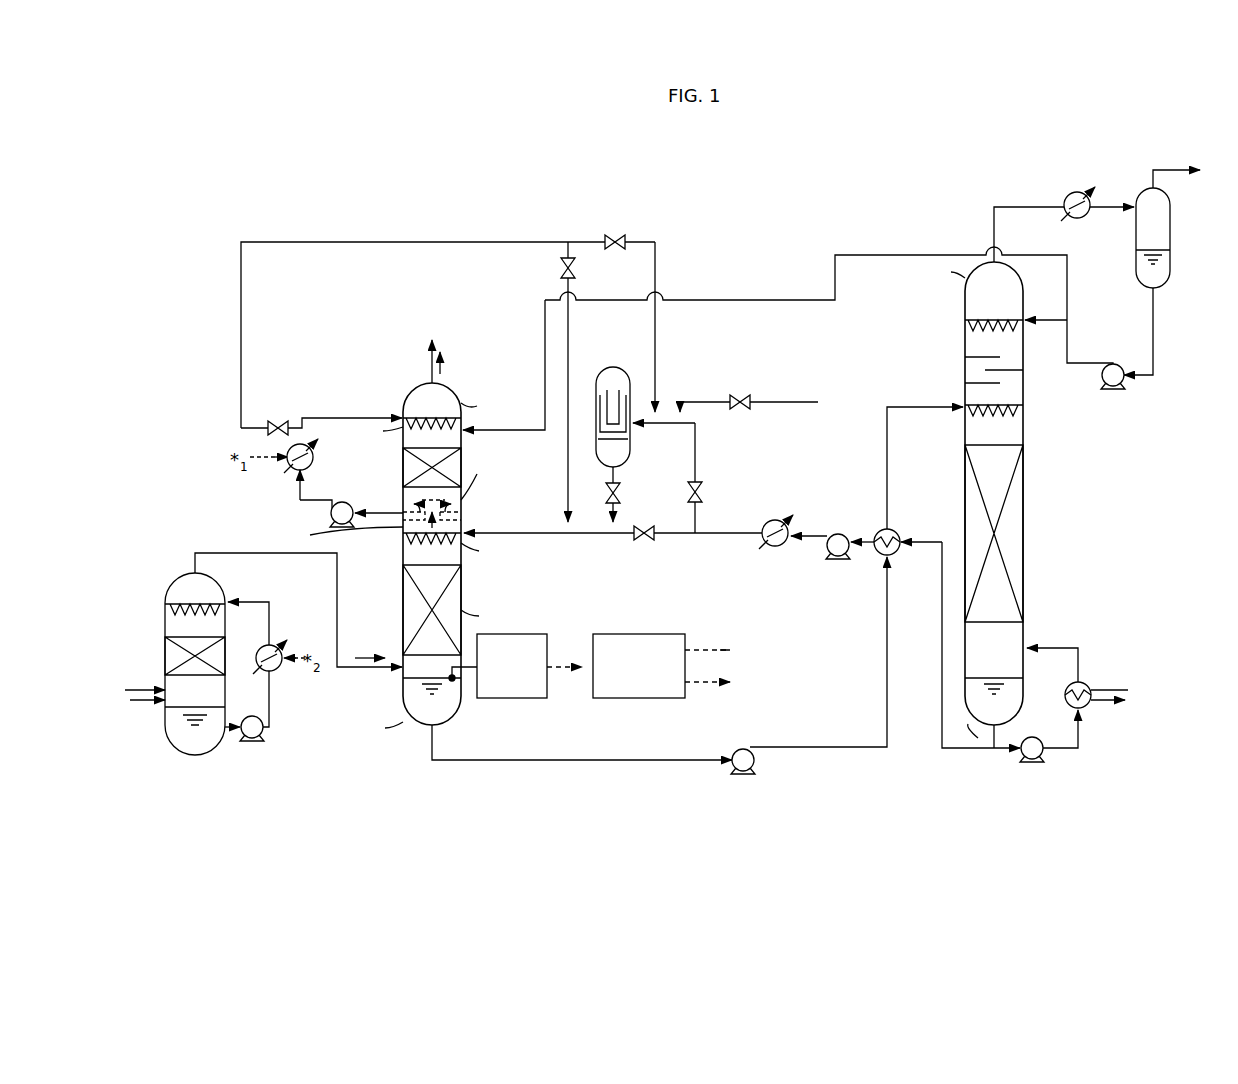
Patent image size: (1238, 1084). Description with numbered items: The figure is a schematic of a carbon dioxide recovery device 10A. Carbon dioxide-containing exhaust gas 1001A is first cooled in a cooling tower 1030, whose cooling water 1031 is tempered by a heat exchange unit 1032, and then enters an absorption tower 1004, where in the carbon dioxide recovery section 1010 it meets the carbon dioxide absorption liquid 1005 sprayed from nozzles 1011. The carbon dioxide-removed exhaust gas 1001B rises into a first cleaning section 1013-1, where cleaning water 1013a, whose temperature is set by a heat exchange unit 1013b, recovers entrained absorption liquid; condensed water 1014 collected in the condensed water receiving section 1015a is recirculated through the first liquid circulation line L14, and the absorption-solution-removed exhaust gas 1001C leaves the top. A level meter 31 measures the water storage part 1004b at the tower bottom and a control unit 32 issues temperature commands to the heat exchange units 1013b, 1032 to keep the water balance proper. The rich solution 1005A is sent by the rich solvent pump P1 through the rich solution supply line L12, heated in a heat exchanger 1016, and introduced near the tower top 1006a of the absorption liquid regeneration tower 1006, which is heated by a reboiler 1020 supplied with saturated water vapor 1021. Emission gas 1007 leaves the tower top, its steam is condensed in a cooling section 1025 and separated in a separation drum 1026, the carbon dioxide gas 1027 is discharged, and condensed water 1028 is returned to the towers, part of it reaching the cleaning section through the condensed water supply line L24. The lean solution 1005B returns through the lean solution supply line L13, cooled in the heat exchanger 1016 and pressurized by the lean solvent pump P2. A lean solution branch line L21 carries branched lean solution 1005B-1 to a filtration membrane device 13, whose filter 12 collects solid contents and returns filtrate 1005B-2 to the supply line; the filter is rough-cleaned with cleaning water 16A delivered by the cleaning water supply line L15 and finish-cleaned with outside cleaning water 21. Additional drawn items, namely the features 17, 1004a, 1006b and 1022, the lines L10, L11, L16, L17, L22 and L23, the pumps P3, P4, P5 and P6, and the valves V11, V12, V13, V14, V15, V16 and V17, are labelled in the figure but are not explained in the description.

The CO2 recovery device 10A is at (847, 186).
The filter 12 is at (630, 392).
The filtration membrane device 13 is at (620, 362).
The inner tube 17 is at (616, 400).
The cleaning water containing the absorption liquid 16A is at (670, 250).
The cleaning water from outside the system 21 is at (775, 393).
The level meter 31 is at (512, 698).
The control unit 32 is at (639, 698).
The CO2-containing exhaust gas 1001A is at (140, 713).
The CO2-removed exhaust gas 1001B is at (329, 538).
The CO2-absorption-solution-removed exhaust gas 1001C is at (442, 362).
The absorption tower 1004 is at (412, 374).
The column top 1004a is at (499, 409).
The water storage part 1004b is at (400, 736).
The CO2 absorption liquid 1005 is at (503, 525).
The rich solution 1005A is at (940, 390).
The lean solution 1005B is at (985, 762).
The branched lean solution 1005B-1 is at (708, 438).
The filtrate 1005B-2 is at (625, 522).
The absorption liquid regeneration tower 1006 is at (933, 310).
The tower top 1006a is at (934, 267).
The second column bottom 1006b is at (976, 733).
The emission gas 1007 is at (982, 212).
The CO2 recovery section 1010 is at (496, 613).
The nozzles 1011 is at (438, 492).
The first cleaning section 1013-1 is at (475, 430).
The cleaning water 1013a is at (365, 405).
The heat exchange unit 1013b is at (288, 466).
The condensed water 1014 is at (403, 510).
The condensed water receiving section 1015a is at (494, 478).
The heat exchanger 1016 is at (892, 528).
The reboiler 1020 is at (1080, 706).
The saturated water vapor 1021 is at (1111, 690).
The heating medium outlet 1022 is at (1122, 704).
The cooling section 1025 is at (1068, 194).
The separation drum 1026 is at (1134, 254).
The CO2 gas 1027 is at (1170, 168).
The condensed water 1028 is at (1165, 300).
The cooling tower 1030 is at (148, 590).
The cooling water 1031 is at (238, 592).
The heat exchange unit 1032 is at (282, 674).
The line L10 is at (138, 690).
The line L11 is at (360, 672).
The rich solution supply line L12 is at (590, 760).
The lean solution supply line L13 is at (940, 747).
The first liquid circulation line L14 is at (310, 500).
The cleaning water supply line L15 is at (518, 242).
The line L16 is at (998, 207).
The line L17 is at (1156, 350).
The lean solution branch line L21 is at (692, 510).
The line L22 is at (606, 540).
The line L23 is at (760, 402).
The condensed water supply line L24 is at (901, 255).
The rich solvent pump P1 is at (747, 742).
The lean solvent pump P2 is at (842, 534).
The pump P3 is at (1036, 738).
The pump P4 is at (340, 500).
The pump P5 is at (1112, 364).
The pump P6 is at (248, 716).
The valve V11 is at (708, 496).
The valve V12 is at (604, 492).
The valve V13 is at (642, 548).
The valve V14 is at (278, 437).
The valve V15 is at (558, 268).
The valve V16 is at (612, 234).
The valve V17 is at (738, 412).